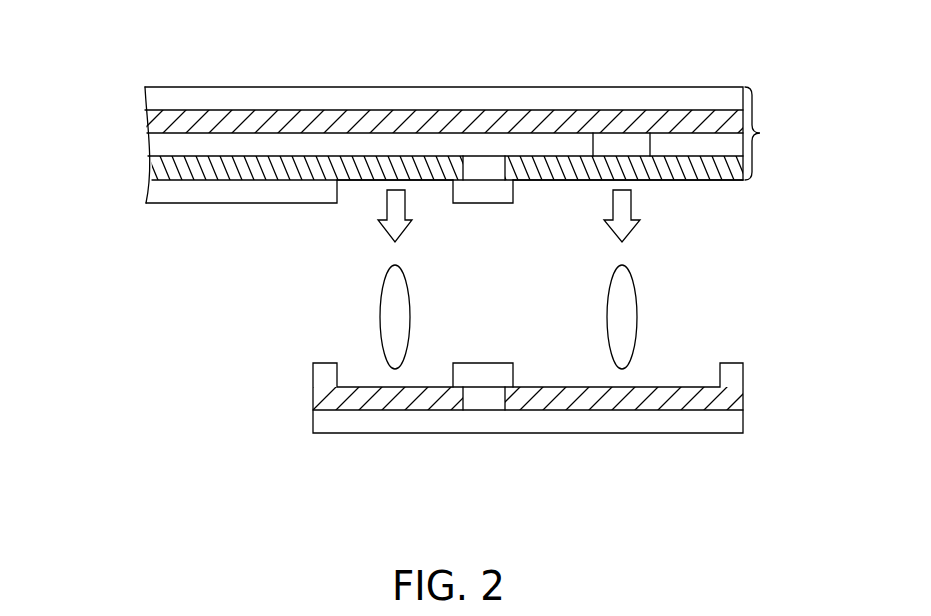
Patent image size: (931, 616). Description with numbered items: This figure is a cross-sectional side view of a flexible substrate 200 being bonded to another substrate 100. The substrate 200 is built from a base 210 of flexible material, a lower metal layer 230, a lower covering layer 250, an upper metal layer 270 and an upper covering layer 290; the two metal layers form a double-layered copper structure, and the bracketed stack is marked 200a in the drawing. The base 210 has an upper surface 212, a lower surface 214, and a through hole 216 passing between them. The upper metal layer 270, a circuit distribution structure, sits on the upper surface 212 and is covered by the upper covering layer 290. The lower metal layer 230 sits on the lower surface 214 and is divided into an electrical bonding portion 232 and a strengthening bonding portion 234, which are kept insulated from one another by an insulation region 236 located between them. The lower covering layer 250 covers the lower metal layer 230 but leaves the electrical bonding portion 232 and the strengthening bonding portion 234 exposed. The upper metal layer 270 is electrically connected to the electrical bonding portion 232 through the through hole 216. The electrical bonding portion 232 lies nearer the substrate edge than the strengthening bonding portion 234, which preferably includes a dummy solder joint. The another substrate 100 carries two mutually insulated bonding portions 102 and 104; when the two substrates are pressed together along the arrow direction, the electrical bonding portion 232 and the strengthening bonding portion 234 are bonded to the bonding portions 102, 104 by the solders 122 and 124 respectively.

The another substrate 100 is at (296, 427).
The bonding portion 102 is at (685, 386).
The bonding portion 104 is at (441, 385).
The solder 122 is at (611, 313).
The solder 124 is at (384, 315).
The substrate 200 is at (500, 77).
The second substrate 200a is at (786, 133).
The base 210 is at (150, 146).
The upper surface 212 is at (266, 131).
The lower surface 214 is at (267, 159).
The through hole 216 is at (627, 150).
The lower metal layer 230 is at (152, 170).
The electrical bonding portion 232 is at (544, 181).
The strengthening bonding portion 234 is at (347, 181).
The insulation region 236 is at (483, 178).
The lower covering layer 250 is at (148, 196).
The upper metal layer 270 is at (150, 121).
The upper covering layer 290 is at (148, 93).